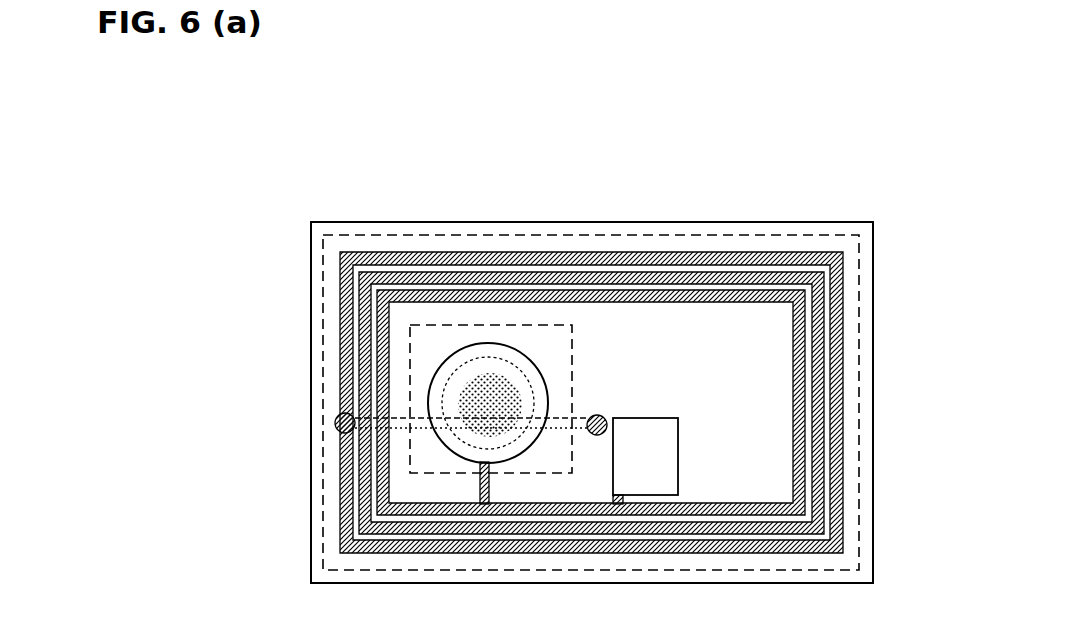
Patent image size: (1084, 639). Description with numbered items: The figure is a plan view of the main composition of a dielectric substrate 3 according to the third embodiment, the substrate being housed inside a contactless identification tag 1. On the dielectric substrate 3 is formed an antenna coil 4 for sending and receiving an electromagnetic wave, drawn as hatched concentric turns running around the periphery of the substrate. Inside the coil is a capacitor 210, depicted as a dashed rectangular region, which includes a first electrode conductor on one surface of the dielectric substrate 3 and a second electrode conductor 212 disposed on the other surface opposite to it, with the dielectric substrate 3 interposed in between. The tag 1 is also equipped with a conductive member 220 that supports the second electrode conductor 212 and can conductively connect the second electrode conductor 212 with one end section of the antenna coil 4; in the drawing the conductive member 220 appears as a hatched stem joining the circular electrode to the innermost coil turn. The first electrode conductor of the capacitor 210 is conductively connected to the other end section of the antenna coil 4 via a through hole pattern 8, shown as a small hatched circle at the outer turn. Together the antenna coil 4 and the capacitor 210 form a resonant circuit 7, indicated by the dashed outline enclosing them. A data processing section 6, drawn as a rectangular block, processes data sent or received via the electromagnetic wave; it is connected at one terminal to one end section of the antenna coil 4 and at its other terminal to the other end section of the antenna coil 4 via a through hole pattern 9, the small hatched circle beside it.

The contactless identification tag 1 is at (762, 190).
The dielectric substrate 3 is at (875, 272).
The antenna coil 4 is at (845, 369).
The data processing section 6 is at (668, 455).
The resonant circuit 7 is at (862, 459).
The through hole pattern 8 is at (336, 416).
The through hole pattern 9 is at (606, 416).
The capacitor 210 is at (572, 337).
The second electrode conductor 212 is at (513, 387).
The conductive member 220 is at (441, 449).